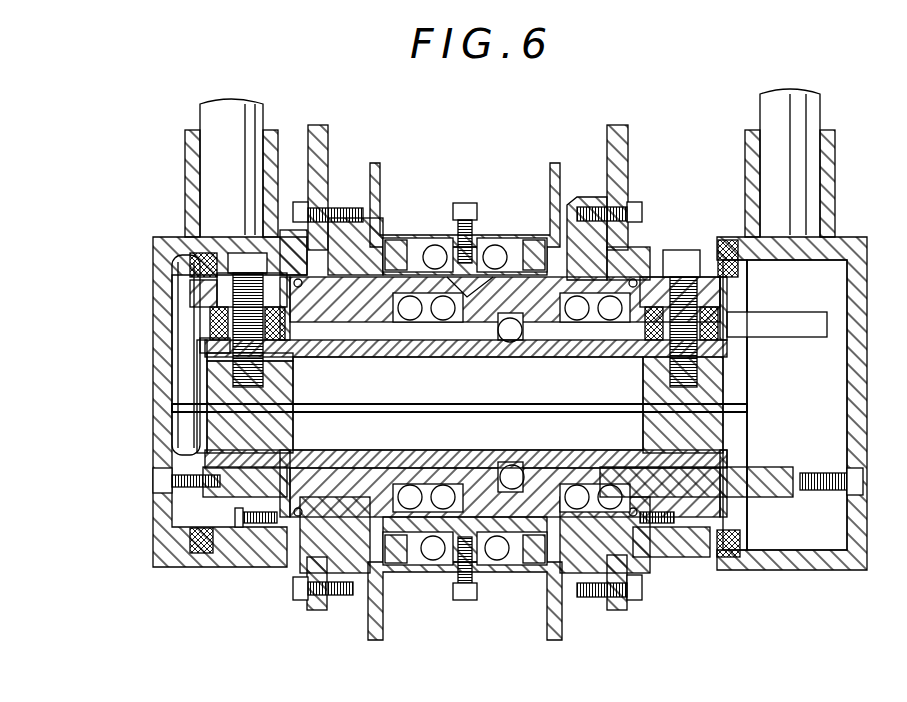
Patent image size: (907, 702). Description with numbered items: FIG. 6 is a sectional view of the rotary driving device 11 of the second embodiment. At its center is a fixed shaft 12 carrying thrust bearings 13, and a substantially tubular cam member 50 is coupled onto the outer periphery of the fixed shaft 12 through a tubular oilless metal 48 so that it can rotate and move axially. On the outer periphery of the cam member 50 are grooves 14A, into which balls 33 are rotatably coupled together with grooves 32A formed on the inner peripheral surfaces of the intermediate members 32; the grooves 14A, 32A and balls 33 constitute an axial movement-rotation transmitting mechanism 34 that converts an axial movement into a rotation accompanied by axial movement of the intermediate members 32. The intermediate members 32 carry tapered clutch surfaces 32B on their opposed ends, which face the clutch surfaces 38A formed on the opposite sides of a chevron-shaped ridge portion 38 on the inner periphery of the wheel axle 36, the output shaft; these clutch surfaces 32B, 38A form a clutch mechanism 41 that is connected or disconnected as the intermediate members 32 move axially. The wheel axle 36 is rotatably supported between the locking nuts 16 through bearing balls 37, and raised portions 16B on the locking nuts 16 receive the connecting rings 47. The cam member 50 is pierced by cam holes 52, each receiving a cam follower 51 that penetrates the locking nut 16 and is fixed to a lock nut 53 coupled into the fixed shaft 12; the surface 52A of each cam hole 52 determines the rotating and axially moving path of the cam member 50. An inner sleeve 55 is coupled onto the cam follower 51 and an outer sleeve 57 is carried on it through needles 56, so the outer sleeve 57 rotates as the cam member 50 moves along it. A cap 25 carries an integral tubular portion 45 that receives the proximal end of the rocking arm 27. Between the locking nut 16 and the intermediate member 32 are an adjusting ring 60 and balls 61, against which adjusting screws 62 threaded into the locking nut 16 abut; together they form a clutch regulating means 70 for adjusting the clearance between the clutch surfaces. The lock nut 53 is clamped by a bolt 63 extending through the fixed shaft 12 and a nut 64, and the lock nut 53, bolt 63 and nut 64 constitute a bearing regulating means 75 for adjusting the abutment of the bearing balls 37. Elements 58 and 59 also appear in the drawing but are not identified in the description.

The rotary driving device 11 is at (705, 111).
The fixed shaft 12 is at (585, 466).
The thrust bearings 13 is at (509, 345).
The grooves 14A is at (630, 350).
The locking nuts 16 is at (297, 245).
The raised portions 16B is at (322, 200).
The cap 25 is at (165, 325).
The rocking arm 27 is at (207, 119).
The intermediate members 32 is at (363, 280).
The grooves 32A is at (572, 350).
The tapered clutch surfaces 32B is at (478, 288).
The balls 33 is at (400, 325).
The axial movement-rotation transmitting mechanism 34 is at (633, 384).
The wheel axle 36 is at (562, 190).
The bearing balls 37 is at (432, 248).
The ridge portion 38 is at (462, 602).
The clutch surfaces 38A is at (458, 295).
The clutch mechanism 41 is at (513, 160).
The tubular portion 45 is at (190, 172).
The connecting rings 47 is at (318, 127).
The tubular oilless metal 48 is at (360, 468).
The cam member 50 is at (423, 358).
The cam follower 51 is at (685, 250).
The cam holes 52 is at (781, 338).
The surface forming cam hole 52A is at (812, 324).
The lock nut 53 is at (724, 380).
The inner sleeve 55 is at (240, 380).
The needles 56 is at (220, 360).
The outer sleeve 57 is at (210, 345).
The washer 58 is at (205, 300).
The shaft 59 is at (525, 404).
The adjusting ring 60 is at (652, 300).
The balls 61 is at (280, 548).
The adjusting screws 62 is at (238, 545).
The bolt 63 is at (160, 478).
The nut 64 is at (200, 448).
The clutch regulating means 70 is at (192, 609).
The bearing regulating means 75 is at (116, 413).